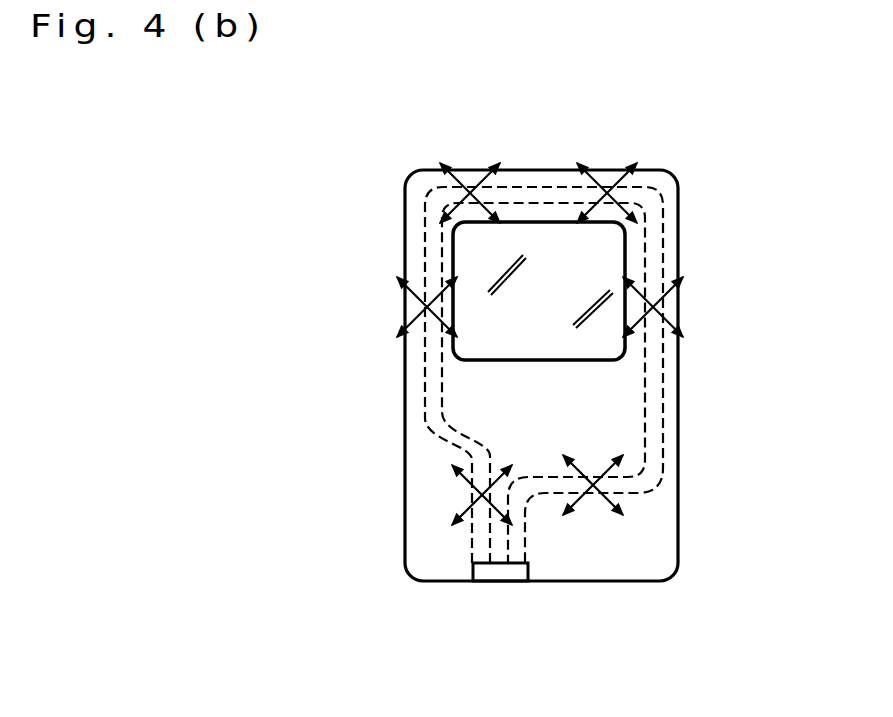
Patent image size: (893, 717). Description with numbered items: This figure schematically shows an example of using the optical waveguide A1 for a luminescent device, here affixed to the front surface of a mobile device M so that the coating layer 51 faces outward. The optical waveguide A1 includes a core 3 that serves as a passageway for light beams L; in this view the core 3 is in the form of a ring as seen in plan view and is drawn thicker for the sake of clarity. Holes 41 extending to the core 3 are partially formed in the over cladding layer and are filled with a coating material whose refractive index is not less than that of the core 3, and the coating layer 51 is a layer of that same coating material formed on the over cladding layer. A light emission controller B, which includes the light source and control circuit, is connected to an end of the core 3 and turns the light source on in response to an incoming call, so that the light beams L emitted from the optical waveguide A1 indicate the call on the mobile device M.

The mobile device M is at (663, 185).
The coating layer 51 is at (663, 510).
The optical waveguide for a luminescent device A1 is at (610, 392).
The holes 41 is at (652, 278).
The core 3 is at (650, 440).
The light emission controller B is at (500, 575).
The light beams L is at (405, 310).